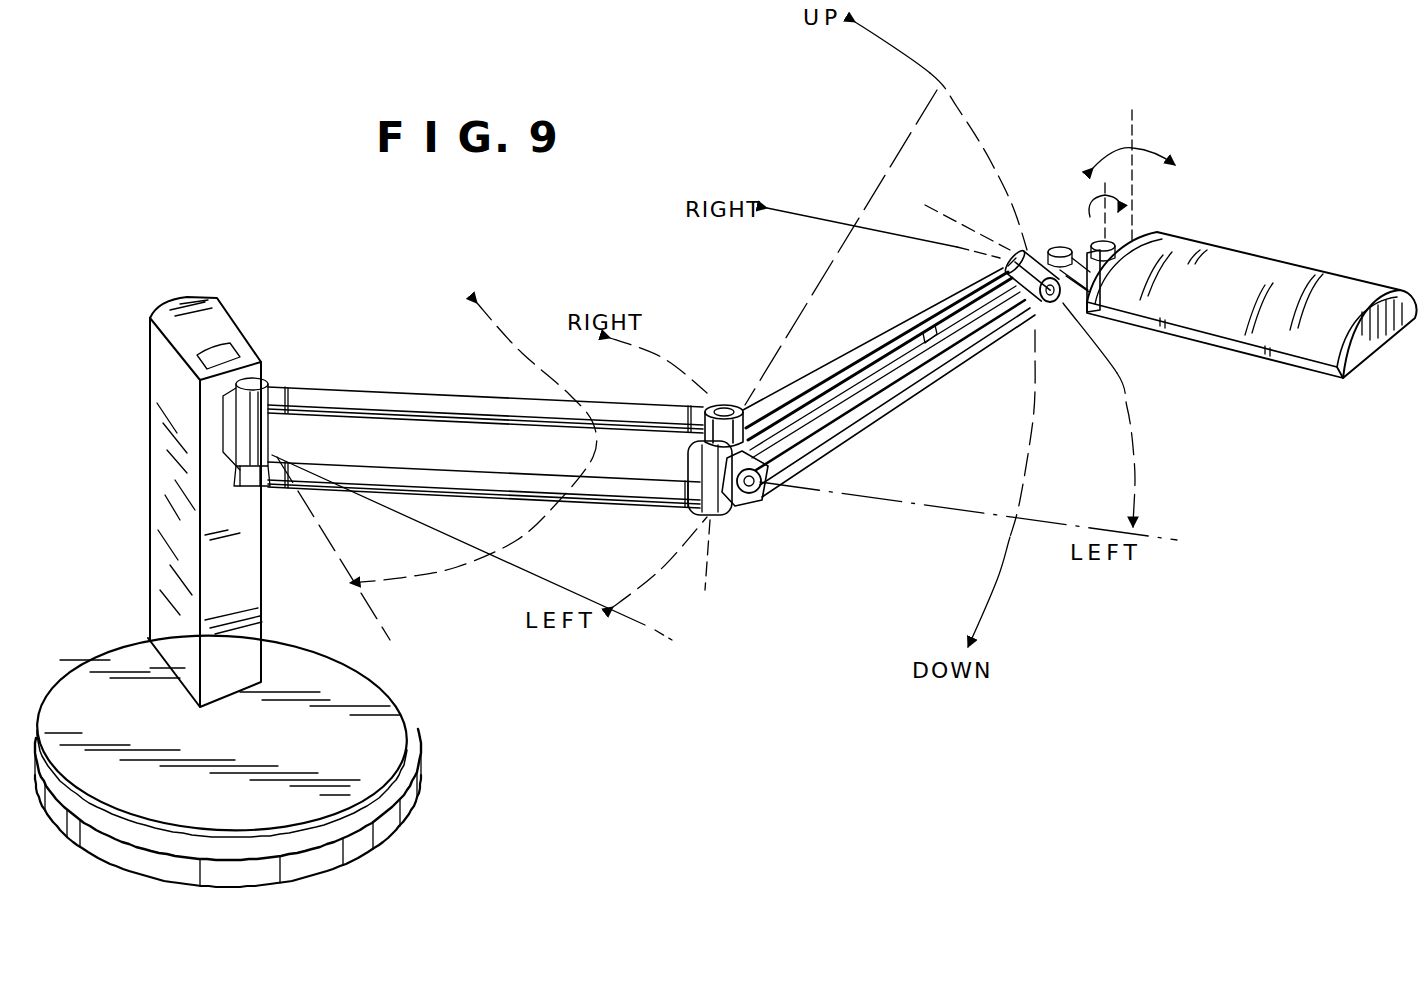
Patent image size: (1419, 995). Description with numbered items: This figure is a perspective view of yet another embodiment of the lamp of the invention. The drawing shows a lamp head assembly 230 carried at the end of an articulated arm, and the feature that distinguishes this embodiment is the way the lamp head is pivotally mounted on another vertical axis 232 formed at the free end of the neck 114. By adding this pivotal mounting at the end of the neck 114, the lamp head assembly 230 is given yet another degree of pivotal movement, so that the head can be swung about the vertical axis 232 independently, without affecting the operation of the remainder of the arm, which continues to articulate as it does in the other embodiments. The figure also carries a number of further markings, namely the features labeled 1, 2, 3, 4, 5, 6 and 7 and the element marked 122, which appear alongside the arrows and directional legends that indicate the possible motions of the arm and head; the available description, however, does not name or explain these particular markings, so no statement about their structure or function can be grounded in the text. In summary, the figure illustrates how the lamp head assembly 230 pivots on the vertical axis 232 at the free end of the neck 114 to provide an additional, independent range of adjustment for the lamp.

The first pivot joint (vertical axis at column) 1 is at (257, 505).
The second pivot joint (vertical axis) 2 is at (724, 403).
The third pivot joint (horizontal axis) 3 is at (763, 493).
The fourth pivot joint (horizontal axis) 4 is at (1067, 303).
The fifth pivot joint 5 is at (1088, 240).
The sixth pivot axis 6 is at (1093, 213).
The seventh pivot axis 7 is at (1144, 175).
The neck 114 is at (1030, 260).
The lamp base 122 is at (853, 700).
The lamp head assembly 230 is at (1243, 240).
The vertical axis 232 is at (1113, 232).